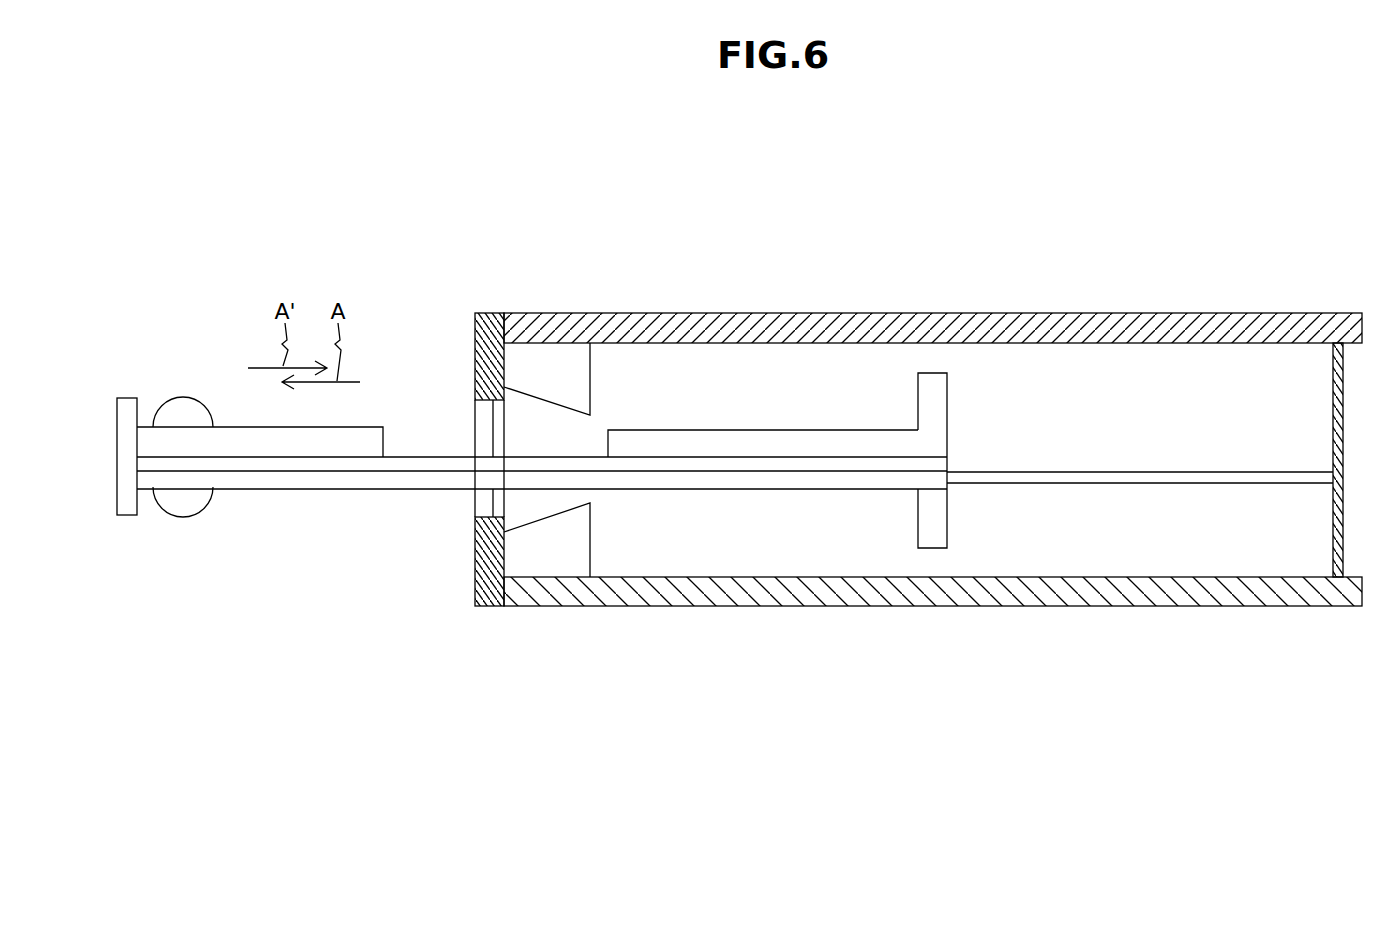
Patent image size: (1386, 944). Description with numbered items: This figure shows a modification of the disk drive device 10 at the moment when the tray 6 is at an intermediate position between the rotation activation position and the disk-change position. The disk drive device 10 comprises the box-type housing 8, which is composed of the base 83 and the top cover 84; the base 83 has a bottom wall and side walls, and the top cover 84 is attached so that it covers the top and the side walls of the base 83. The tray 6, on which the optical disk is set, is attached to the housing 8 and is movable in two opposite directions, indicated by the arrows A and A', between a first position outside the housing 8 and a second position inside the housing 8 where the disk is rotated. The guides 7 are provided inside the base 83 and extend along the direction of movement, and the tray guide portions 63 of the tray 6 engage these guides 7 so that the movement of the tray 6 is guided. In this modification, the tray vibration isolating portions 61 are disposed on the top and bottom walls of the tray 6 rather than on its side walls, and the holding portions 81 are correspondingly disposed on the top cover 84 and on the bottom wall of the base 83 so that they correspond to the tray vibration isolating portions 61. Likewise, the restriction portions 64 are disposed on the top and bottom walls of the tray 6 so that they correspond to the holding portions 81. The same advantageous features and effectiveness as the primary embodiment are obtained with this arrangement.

The disk drive device 10 is at (925, 262).
The top cover 84 is at (1200, 317).
The housing 8 is at (718, 597).
The base 83 is at (1248, 600).
The holding portions 81 is at (540, 555).
The tray vibration isolating portions 61 is at (183, 500).
The tray 6 is at (339, 480).
The tray guide portions 63 is at (852, 470).
The restriction portions 64 is at (935, 528).
The guides 7 is at (1190, 482).